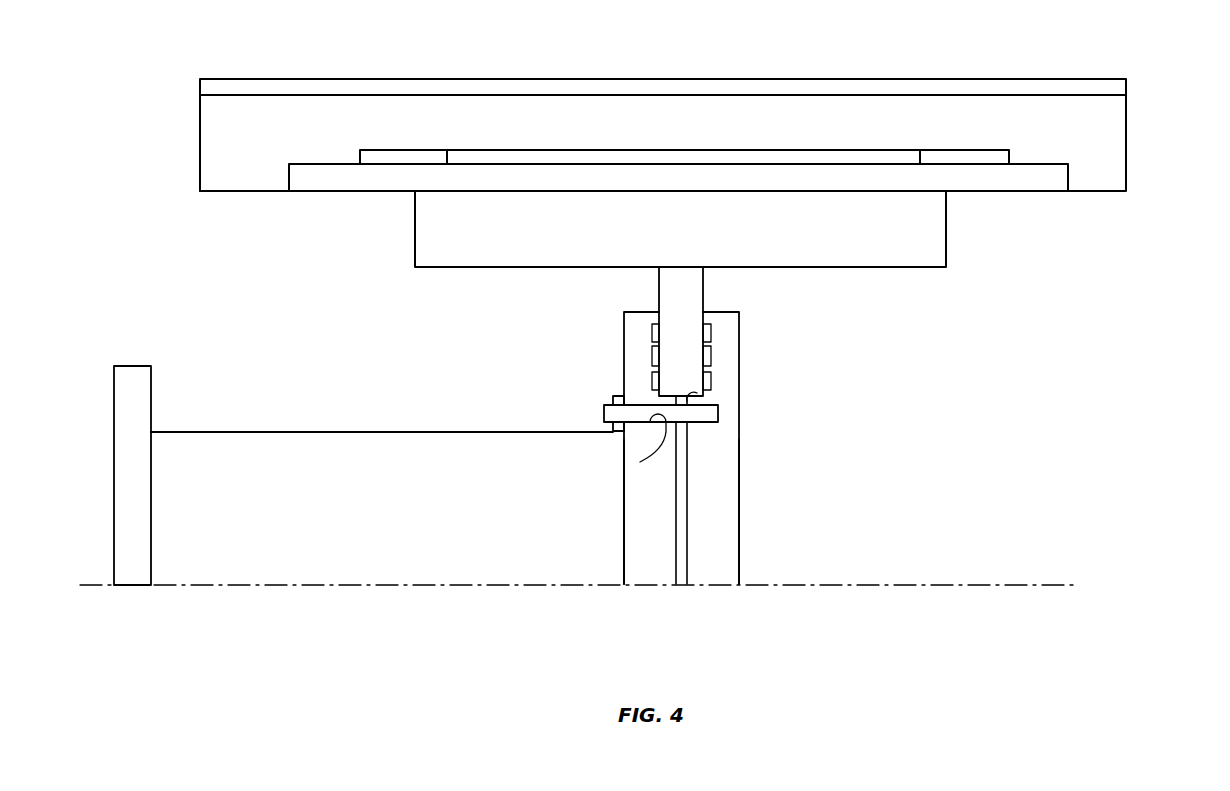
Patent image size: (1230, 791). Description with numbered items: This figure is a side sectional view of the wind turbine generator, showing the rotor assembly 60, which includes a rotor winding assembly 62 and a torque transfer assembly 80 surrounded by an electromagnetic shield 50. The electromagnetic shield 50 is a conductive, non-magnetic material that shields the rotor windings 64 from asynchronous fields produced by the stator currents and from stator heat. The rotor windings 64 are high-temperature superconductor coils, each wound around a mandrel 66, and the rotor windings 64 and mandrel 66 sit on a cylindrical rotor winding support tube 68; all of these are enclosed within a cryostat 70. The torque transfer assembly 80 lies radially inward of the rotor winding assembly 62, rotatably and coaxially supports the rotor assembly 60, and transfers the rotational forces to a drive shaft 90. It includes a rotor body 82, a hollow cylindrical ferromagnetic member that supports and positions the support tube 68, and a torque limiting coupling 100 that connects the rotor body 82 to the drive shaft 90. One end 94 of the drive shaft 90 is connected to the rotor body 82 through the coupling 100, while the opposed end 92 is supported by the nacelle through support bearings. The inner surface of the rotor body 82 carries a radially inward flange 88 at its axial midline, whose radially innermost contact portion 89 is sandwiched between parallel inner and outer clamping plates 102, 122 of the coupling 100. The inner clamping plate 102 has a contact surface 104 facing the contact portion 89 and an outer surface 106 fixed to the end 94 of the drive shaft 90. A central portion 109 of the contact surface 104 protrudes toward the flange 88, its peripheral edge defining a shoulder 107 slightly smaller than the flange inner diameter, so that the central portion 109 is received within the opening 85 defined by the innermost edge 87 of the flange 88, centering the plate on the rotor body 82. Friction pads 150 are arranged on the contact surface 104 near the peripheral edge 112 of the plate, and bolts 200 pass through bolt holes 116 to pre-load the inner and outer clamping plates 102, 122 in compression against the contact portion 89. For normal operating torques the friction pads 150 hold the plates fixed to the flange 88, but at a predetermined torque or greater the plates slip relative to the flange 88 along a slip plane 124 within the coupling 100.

The electromagnetic shield 50 is at (808, 85).
The rotor assembly 60 is at (488, 41).
The rotor winding assembly 62 is at (1146, 77).
The rotor windings 64 is at (950, 160).
The mandrel 66 is at (717, 157).
The rotor winding support tube 68 is at (1027, 171).
The cryostat 70 is at (216, 141).
The torque transfer assembly 80 is at (1150, 200).
The rotor body 82 is at (918, 231).
The opening 85 is at (683, 461).
The innermost edge 87 is at (718, 414).
The flange 88 is at (676, 273).
The contact portion 89 is at (686, 360).
The drive shaft 90 is at (304, 525).
The opposed end 92 is at (162, 450).
The end 94 is at (613, 440).
The torque limiting coupling 100 is at (882, 377).
The inner clamping plate 102 is at (645, 566).
The contact surface 104 is at (678, 563).
The outer surface 106 is at (624, 558).
The shoulder 107 is at (700, 386).
The central portion 109 is at (672, 500).
The peripheral edge 112 is at (635, 310).
The bolt holes 116 is at (640, 462).
The outer clamping plate 122 is at (728, 530).
The slip plane 124 is at (652, 357).
The friction pads 150 is at (652, 332).
The bolts 200 is at (612, 404).